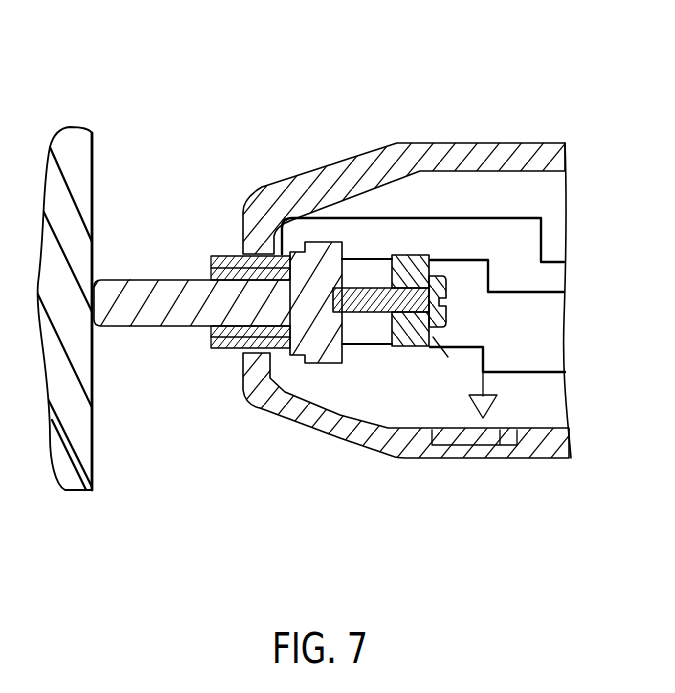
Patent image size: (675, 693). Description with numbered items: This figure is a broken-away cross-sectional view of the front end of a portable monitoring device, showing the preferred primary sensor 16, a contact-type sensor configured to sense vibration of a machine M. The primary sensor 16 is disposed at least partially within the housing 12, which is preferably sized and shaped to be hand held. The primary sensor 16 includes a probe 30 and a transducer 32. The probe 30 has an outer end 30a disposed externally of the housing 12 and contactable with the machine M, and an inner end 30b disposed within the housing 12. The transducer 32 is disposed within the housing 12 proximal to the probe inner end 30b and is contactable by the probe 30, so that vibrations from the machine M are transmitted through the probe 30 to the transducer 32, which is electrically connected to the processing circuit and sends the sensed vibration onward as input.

The machine M is at (96, 155).
The housing 12 is at (452, 130).
The primary sensor 16 is at (329, 305).
The probe 30 is at (137, 329).
The outer end 30a is at (108, 276).
The inner end 30b is at (377, 257).
The transducer 32 is at (410, 352).